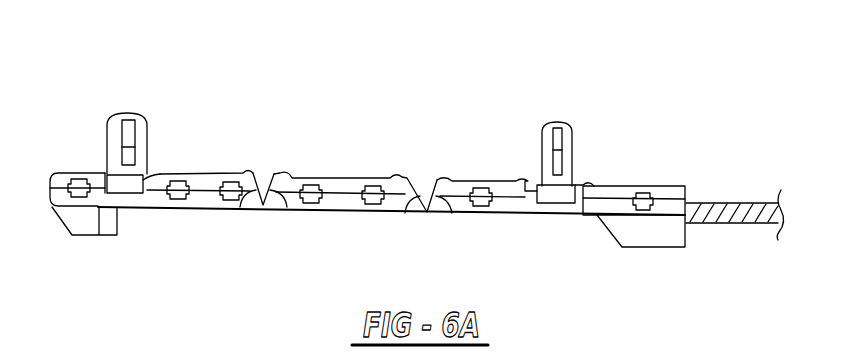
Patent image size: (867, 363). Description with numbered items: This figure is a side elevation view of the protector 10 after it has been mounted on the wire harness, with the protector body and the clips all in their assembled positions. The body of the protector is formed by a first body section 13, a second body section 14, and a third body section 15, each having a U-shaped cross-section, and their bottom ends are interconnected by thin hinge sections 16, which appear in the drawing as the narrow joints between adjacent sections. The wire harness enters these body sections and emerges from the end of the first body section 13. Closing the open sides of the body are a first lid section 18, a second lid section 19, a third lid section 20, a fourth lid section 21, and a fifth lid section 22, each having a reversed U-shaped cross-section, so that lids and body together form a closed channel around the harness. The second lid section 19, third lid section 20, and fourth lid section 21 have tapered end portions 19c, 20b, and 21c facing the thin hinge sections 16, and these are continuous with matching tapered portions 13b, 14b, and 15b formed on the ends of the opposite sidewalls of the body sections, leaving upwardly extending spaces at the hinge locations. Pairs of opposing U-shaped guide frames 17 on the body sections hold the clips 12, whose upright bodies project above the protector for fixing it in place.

The protector 10 is at (45, 167).
The clip 12 is at (128, 113).
The first body section 13 is at (605, 248).
The tapered portion 13b is at (455, 213).
The second body section 14 is at (338, 213).
The tapered portion 14b is at (285, 212).
The third body section 15 is at (177, 210).
The tapered portion 15b is at (240, 212).
The thin hinge section 16 is at (263, 212).
The guide frame 17 is at (103, 235).
The first lid section 18 is at (668, 186).
The second lid section 19 is at (486, 181).
The end portion 19c is at (452, 181).
The third lid section 20 is at (336, 178).
The end portion 20b is at (280, 173).
The fourth lid section 21 is at (180, 173).
The end portion 21c is at (253, 173).
The fifth lid section 22 is at (70, 172).